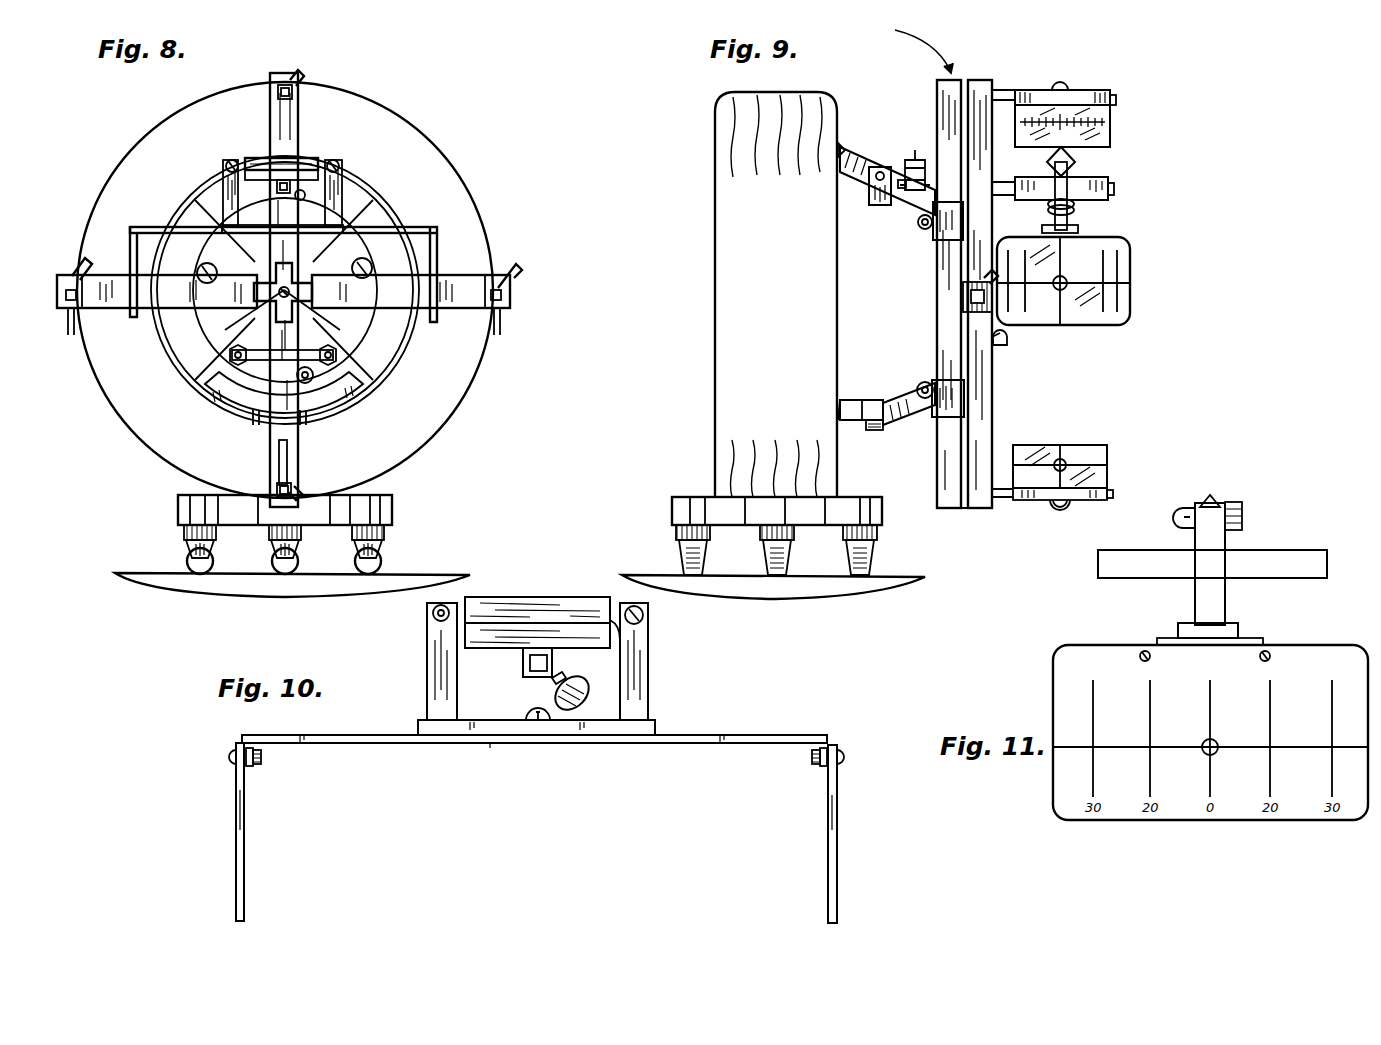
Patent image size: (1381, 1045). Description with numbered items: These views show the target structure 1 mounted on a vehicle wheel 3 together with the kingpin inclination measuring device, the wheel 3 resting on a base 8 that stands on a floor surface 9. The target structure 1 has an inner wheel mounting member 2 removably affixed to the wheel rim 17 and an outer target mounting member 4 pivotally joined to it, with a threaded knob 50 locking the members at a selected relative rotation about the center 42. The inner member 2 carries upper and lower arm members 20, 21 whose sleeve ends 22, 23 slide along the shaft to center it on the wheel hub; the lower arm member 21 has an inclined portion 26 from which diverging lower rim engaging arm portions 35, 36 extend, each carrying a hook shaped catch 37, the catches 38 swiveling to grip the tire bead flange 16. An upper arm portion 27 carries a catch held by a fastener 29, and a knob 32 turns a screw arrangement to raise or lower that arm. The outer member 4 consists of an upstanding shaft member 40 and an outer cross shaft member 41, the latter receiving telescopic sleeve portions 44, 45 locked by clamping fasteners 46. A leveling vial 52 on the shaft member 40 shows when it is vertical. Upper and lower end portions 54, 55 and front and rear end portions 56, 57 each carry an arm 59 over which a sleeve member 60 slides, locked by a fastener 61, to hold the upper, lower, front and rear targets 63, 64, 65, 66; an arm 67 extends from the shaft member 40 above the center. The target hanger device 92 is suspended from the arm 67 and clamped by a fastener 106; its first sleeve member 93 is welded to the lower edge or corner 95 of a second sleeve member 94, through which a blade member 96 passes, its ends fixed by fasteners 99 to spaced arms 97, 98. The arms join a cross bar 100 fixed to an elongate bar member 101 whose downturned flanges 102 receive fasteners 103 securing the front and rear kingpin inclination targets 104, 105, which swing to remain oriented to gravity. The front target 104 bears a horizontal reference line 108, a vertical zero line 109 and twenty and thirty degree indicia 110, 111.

In FIG. 9, the target structure 1 is at (916, 42).
In FIG. 9, the inner wheel mounting member 2 is at (937, 472).
In FIG. 8, the wheel 3 is at (468, 388).
In FIG. 9, the wheel 3 is at (778, 360).
In FIG. 9, the outer target mounting member 4 is at (993, 400).
In FIG. 8, the base 8 is at (395, 505).
In FIG. 9, the base 8 is at (672, 505).
In FIG. 8, the floor 9 is at (442, 572).
In FIG. 9, the floor 9 is at (905, 577).
In FIG. 8, the tire bead flange 16 is at (203, 405).
In FIG. 8, the wheel rim 17 is at (175, 345).
In FIG. 9, the upper arm member 20 is at (880, 206).
In FIG. 8, the lower arm member 21 is at (330, 410).
In FIG. 9, the lower arm member 21 is at (918, 427).
In FIG. 9, the sleeve end 22 is at (935, 243).
In FIG. 9, the sleeve end 23 is at (952, 380).
In FIG. 9, the inclined portion 26 is at (917, 385).
In FIG. 9, the upper arm portion 27 is at (850, 175).
In FIG. 9, the fastener 29 is at (862, 150).
In FIG. 9, the knob 32 is at (918, 150).
In FIG. 8, the lower rim engaging arm portion 35 is at (255, 412).
In FIG. 8, the lower rim engaging arm portion 36 is at (305, 412).
In FIG. 8, the hook shaped catch 37 is at (350, 405).
In FIG. 9, the hook shaped catch 37 is at (852, 422).
In FIG. 9, the catch 38 is at (842, 400).
In FIG. 8, the upstanding shaft member 40 is at (328, 326).
In FIG. 9, the upstanding shaft member 40 is at (993, 425).
In FIG. 8, the outer cross shaft member 41 is at (250, 318).
In FIG. 9, the outer cross shaft member 41 is at (962, 297).
In FIG. 8, the center 42 is at (205, 382).
In FIG. 8, the sleeve portion 44 is at (100, 275).
In FIG. 9, the sleeve portion 44 is at (975, 312).
In FIG. 8, the sleeve portion 45 is at (490, 275).
In FIG. 8, the clamping fastener 46 is at (370, 266).
In FIG. 8, the threaded knob 50 is at (278, 276).
In FIG. 8, the leveling vial 52 is at (340, 355).
In FIG. 9, the leveling vial 52 is at (1010, 336).
In FIG. 8, the upper end portion 54 is at (298, 82).
In FIG. 9, the upper end portion 54 is at (993, 82).
In FIG. 8, the lower end portion 55 is at (302, 496).
In FIG. 9, the lower end portion 55 is at (993, 500).
In FIG. 8, the front end portion 56 is at (70, 282).
In FIG. 8, the rear end portion 57 is at (512, 274).
In FIG. 9, the arm 59 is at (1003, 488).
In FIG. 8, the sleeve member 60 is at (282, 88).
In FIG. 9, the sleeve member 60 is at (1095, 90).
In FIG. 8, the fastener 61 is at (510, 276).
In FIG. 9, the fastener 61 is at (1062, 510).
In FIG. 8, the upper target 63 is at (298, 122).
In FIG. 9, the upper target 63 is at (1112, 125).
In FIG. 8, the lower target 64 is at (278, 462).
In FIG. 9, the lower target 64 is at (1110, 465).
In FIG. 8, the front target 65 is at (66, 320).
In FIG. 8, the rear target 66 is at (503, 322).
In FIG. 8, the arm 67 is at (228, 162).
In FIG. 9, the arm 67 is at (998, 182).
In FIG. 9, the target hanger device 92 is at (1100, 198).
In FIG. 10, the target hanger device 92 is at (426, 683).
In FIG. 8, the first sleeve member 93 is at (292, 188).
In FIG. 9, the first sleeve member 93 is at (1095, 180).
In FIG. 10, the first sleeve member 93 is at (522, 663).
In FIG. 11, the first sleeve member 93 is at (1290, 580).
In FIG. 8, the second sleeve member 94 is at (262, 157).
In FIG. 9, the second sleeve member 94 is at (1070, 162).
In FIG. 10, the second sleeve member 94 is at (530, 597).
In FIG. 11, the second sleeve member 94 is at (1212, 498).
In FIG. 8, the lower edge or corner 95 is at (281, 175).
In FIG. 10, the lower edge or corner 95 is at (610, 640).
In FIG. 8, the blade member 96 is at (336, 162).
In FIG. 10, the blade member 96 is at (615, 615).
In FIG. 8, the arm 97 is at (224, 188).
In FIG. 9, the arm 97 is at (1070, 218).
In FIG. 10, the arm 97 is at (426, 645).
In FIG. 11, the arm 97 is at (1195, 598).
In FIG. 8, the arm 98 is at (343, 180).
In FIG. 10, the arm 98 is at (649, 672).
In FIG. 10, the fastener 99 is at (432, 612).
In FIG. 11, the fastener 99 is at (1242, 512).
In FIG. 8, the cross bar 100 is at (282, 229).
In FIG. 10, the cross bar 100 is at (656, 732).
In FIG. 11, the cross bar 100 is at (1238, 628).
In FIG. 8, the elongate bar member 101 is at (150, 197).
In FIG. 10, the elongate bar member 101 is at (770, 735).
In FIG. 11, the elongate bar member 101 is at (1157, 642).
In FIG. 10, the downturned flange 102 is at (255, 768).
In FIG. 11, the fastener 103 is at (1270, 656).
In FIG. 8, the front kingpin inclination target 104 is at (126, 245).
In FIG. 9, the front kingpin inclination target 104 is at (1133, 272).
In FIG. 10, the front kingpin inclination target 104 is at (236, 805).
In FIG. 11, the front kingpin inclination target 104 is at (1280, 820).
In FIG. 8, the rear kingpin inclination target 105 is at (470, 218).
In FIG. 10, the rear kingpin inclination target 105 is at (837, 823).
In FIG. 10, the fastener 106 is at (553, 700).
In FIG. 11, the horizontal reference line 108 is at (1260, 750).
In FIG. 11, the vertical zero line 109 is at (1212, 712).
In FIG. 11, the 20 degree indicia 110 is at (1152, 712).
In FIG. 11, the 30 degree indicia 111 is at (1330, 710).